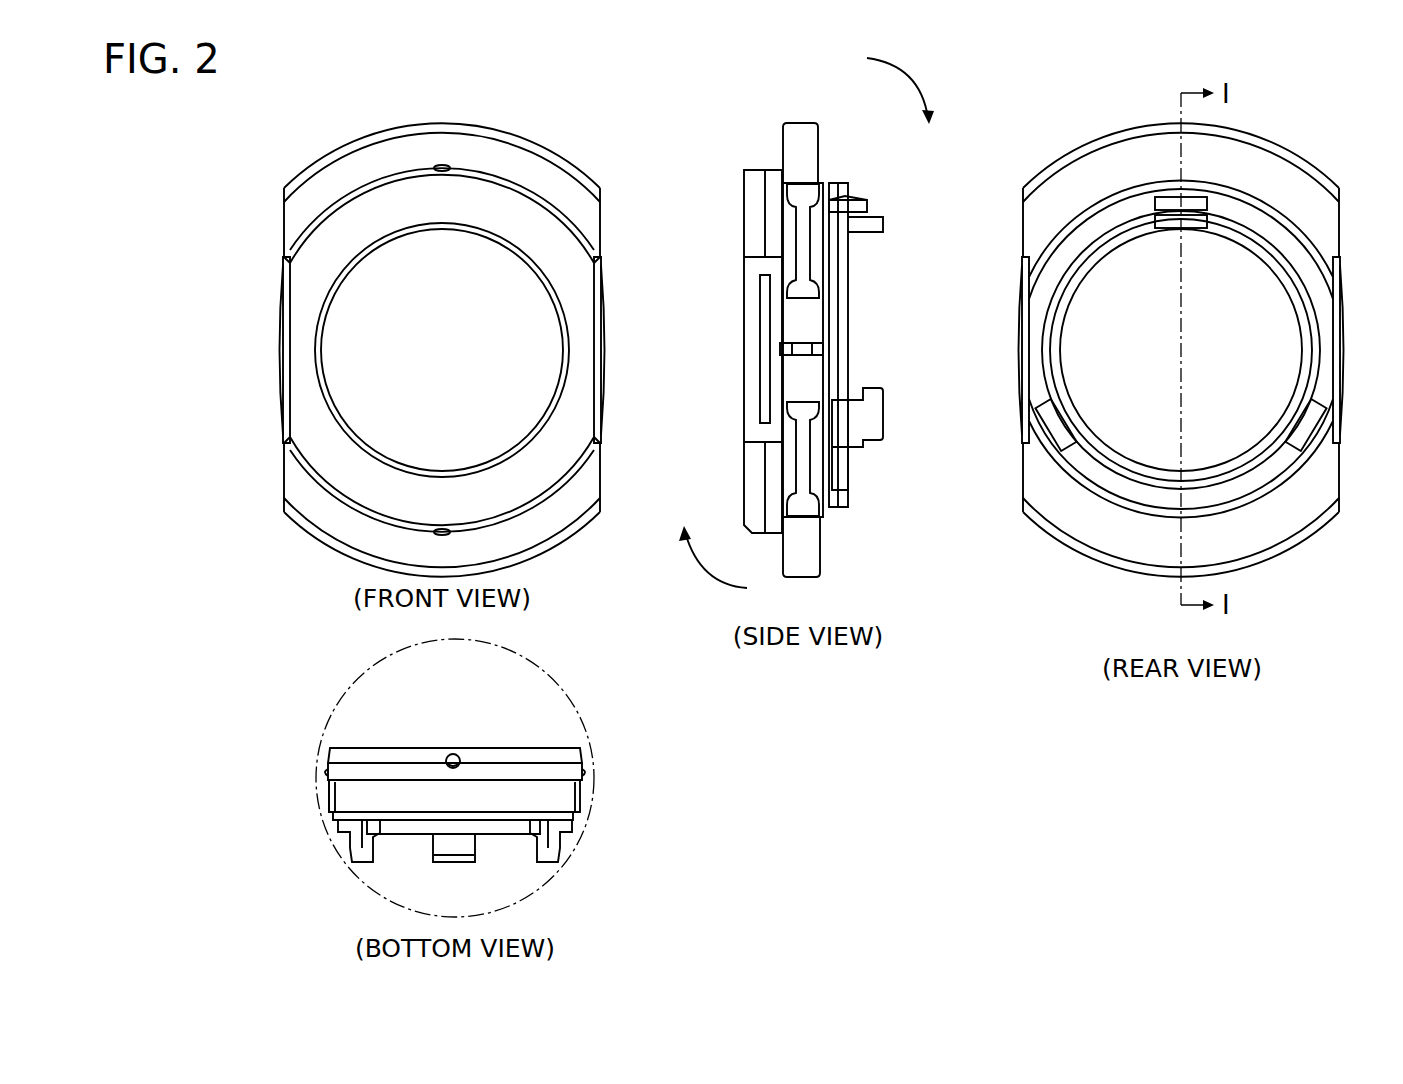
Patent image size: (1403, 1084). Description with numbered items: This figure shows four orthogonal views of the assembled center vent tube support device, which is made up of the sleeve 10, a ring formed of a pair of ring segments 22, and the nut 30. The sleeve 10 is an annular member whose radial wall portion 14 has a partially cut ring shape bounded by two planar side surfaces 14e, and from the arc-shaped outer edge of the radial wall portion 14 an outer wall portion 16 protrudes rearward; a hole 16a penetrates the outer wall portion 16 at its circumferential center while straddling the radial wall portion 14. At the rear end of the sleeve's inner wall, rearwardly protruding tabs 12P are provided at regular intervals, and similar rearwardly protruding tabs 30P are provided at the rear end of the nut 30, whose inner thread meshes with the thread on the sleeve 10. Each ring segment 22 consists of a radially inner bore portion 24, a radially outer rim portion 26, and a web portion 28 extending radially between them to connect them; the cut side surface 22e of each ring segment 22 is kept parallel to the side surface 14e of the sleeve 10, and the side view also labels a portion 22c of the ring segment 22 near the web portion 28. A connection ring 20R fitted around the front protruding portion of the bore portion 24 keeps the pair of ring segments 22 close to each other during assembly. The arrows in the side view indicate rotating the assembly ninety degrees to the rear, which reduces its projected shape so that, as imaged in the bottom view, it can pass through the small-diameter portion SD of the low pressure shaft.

The sleeve 10 is at (284, 290).
The tabs 12P is at (883, 232).
The radial wall portion 14 is at (577, 280).
The side surfaces 14e is at (600, 398).
The outer wall portion 16 is at (770, 170).
The hole 16a is at (448, 165).
The connection ring 20R is at (278, 350).
The ring segment 22 is at (284, 222).
The connecting portion 22c is at (825, 348).
The side surface 22e is at (602, 233).
The bore portion 24 is at (808, 317).
The rim portion 26 is at (570, 168).
The web portion 28 is at (582, 208).
The nut 30 is at (840, 436).
The tabs 30P is at (857, 208).
The small-diameter portion SD is at (575, 712).